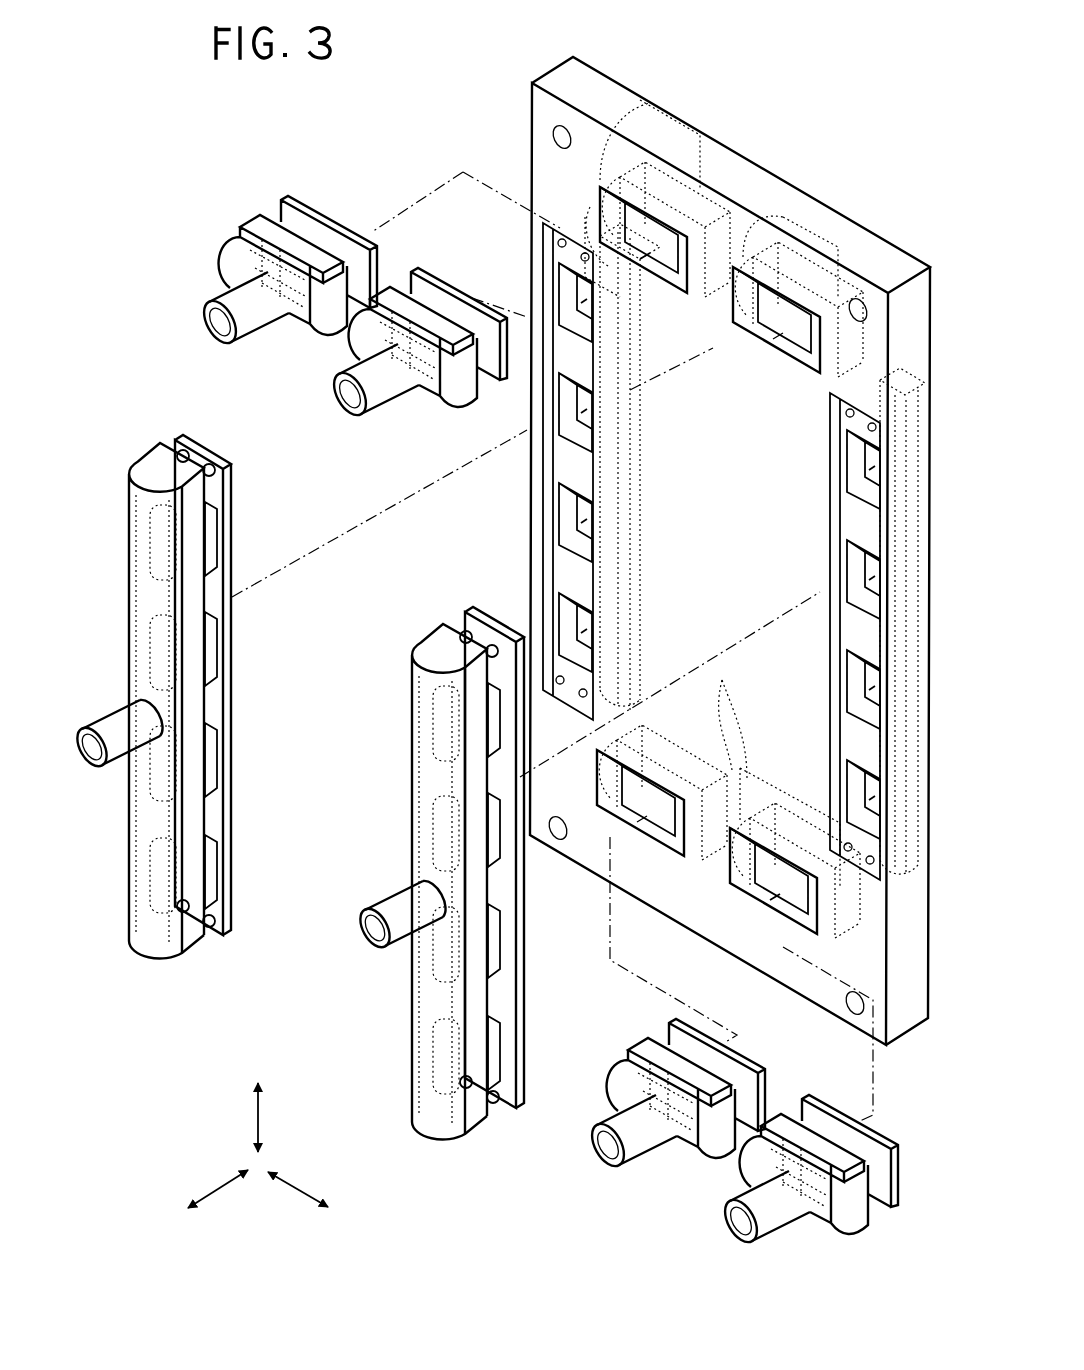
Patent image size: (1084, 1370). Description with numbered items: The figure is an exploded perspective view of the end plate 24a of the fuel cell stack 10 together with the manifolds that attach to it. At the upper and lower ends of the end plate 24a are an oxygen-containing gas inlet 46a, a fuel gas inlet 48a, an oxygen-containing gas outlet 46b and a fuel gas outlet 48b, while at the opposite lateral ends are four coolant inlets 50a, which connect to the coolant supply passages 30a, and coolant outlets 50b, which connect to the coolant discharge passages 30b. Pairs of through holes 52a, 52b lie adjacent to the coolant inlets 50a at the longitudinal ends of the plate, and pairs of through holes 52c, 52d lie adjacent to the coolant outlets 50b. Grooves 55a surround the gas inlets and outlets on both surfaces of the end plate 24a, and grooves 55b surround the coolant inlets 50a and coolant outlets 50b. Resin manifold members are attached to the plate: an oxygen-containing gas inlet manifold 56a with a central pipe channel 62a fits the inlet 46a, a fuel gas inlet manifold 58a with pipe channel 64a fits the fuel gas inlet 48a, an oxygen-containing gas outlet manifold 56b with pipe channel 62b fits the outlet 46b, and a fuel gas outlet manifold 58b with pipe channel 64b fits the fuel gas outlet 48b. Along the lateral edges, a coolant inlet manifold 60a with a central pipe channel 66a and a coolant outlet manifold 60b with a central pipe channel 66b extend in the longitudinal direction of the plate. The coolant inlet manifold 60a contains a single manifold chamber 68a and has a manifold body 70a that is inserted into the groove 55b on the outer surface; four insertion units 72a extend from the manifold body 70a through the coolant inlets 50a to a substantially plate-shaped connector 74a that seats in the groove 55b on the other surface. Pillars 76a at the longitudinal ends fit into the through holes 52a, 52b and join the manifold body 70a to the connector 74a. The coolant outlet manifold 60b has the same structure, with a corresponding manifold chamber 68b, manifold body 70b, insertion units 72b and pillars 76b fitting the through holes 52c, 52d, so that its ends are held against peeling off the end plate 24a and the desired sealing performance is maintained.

The connector assembly 10 is at (305, 150).
The end plate 24a is at (534, 74).
The coolant supply passages 30a is at (624, 467).
The coolant discharge passages 30b is at (816, 632).
The oxygen-containing gas inlet 46a is at (710, 291).
The oxygen-containing gas outlet 46b is at (707, 861).
The fuel gas inlet 48a is at (759, 339).
The fuel gas outlet 48b is at (662, 767).
The coolant inlets 50a is at (588, 302).
The coolant outlets 50b is at (863, 465).
The through holes 52a is at (525, 508).
The through holes 52b is at (567, 735).
The through holes 52c is at (817, 678).
The through holes 52d is at (854, 907).
The grooves 55a is at (598, 192).
The grooves 55b is at (565, 468).
The oxygen-containing gas inlet manifold 56a is at (278, 307).
The oxygen-containing gas outlet manifold 56b is at (666, 1130).
The fuel gas inlet manifold 58a is at (396, 368).
The fuel gas outlet manifold 58b is at (785, 1194).
The coolant inlet manifold 60a is at (323, 700).
The coolant outlet manifold 60b is at (454, 871).
The pipe channel 62a is at (248, 320).
The pipe channel 62b is at (637, 1145).
The pipe channel 64a is at (382, 398).
The pipe channel 64b is at (768, 1222).
The pipe channel 66a is at (118, 722).
The pipe channel 66b is at (403, 900).
The manifold chamber 68a is at (139, 704).
The body of second holder 68b is at (421, 881).
The manifold body 70a is at (153, 928).
The lower end of second holder 70b is at (435, 992).
The insertion units 72a is at (210, 546).
The slots of second holder plate 72b is at (500, 947).
The connector 74a is at (231, 707).
The pillars 76a is at (212, 479).
The pillars 76b is at (470, 632).